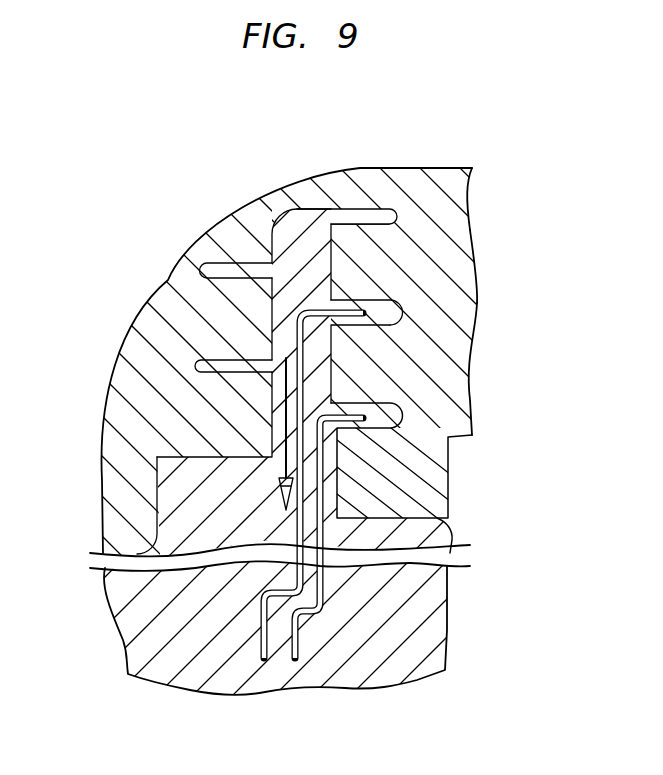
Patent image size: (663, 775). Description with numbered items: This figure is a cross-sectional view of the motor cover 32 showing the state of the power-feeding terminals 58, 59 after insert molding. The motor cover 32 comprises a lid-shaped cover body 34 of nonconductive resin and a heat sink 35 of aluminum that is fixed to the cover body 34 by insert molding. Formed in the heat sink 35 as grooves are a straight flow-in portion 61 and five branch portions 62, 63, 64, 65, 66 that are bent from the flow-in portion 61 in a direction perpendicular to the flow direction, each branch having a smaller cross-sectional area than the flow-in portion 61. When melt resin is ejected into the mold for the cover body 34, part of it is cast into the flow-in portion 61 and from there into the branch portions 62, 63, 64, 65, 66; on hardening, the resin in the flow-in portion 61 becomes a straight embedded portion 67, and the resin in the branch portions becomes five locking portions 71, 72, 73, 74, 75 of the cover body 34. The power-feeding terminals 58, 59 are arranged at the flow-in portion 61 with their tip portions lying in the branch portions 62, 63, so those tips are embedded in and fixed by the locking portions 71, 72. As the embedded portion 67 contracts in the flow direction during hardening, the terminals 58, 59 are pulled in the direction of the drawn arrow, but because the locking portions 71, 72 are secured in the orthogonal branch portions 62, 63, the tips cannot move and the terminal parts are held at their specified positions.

The motor cover 32 is at (299, 146).
The cover body 34 is at (423, 673).
The heat sink 35 is at (440, 150).
The power-feeding terminal 58 is at (340, 581).
The power-feeding terminal 59 is at (243, 624).
The flow-in portion 61 is at (272, 414).
The branch portion 62 is at (373, 398).
The branch portion 63 is at (388, 290).
The branch portion 64 is at (381, 209).
The branch portion 65 is at (238, 263).
The branch portion 66 is at (208, 358).
The embedded portion 67 is at (282, 445).
The locking portion 71 is at (389, 413).
The locking portion 72 is at (392, 316).
The locking portion 73 is at (475, 167).
The locking portion 74 is at (203, 267).
The locking portion 75 is at (197, 366).